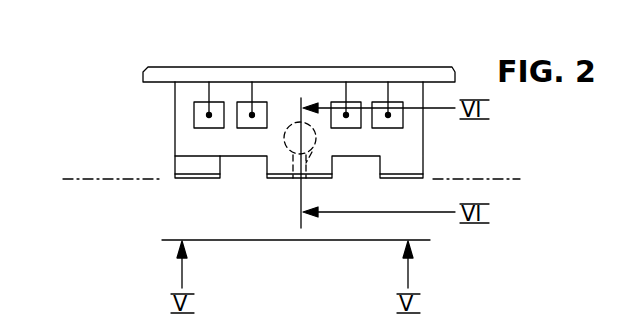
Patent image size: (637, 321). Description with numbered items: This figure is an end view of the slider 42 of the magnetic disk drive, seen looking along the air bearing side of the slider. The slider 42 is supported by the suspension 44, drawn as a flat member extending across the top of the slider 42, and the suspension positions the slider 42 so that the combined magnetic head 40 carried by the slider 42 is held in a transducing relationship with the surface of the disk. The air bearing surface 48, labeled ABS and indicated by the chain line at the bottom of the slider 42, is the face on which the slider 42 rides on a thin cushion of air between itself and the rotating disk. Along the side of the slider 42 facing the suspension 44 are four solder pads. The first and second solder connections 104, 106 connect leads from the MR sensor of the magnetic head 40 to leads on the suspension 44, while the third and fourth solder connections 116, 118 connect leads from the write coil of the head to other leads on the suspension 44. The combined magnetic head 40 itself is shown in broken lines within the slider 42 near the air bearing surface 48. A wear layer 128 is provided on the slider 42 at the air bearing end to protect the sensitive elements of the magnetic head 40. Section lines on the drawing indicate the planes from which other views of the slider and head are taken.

The combined magnetic head 40 is at (286, 151).
The slider 42 is at (175, 118).
The suspension 44 is at (425, 67).
The air bearing surface 48 is at (92, 182).
The first solder connection 104 is at (195, 108).
The second solder connection 106 is at (377, 103).
The third solder connection 116 is at (240, 108).
The fourth solder connection 118 is at (333, 103).
The wear layer 128 is at (185, 178).